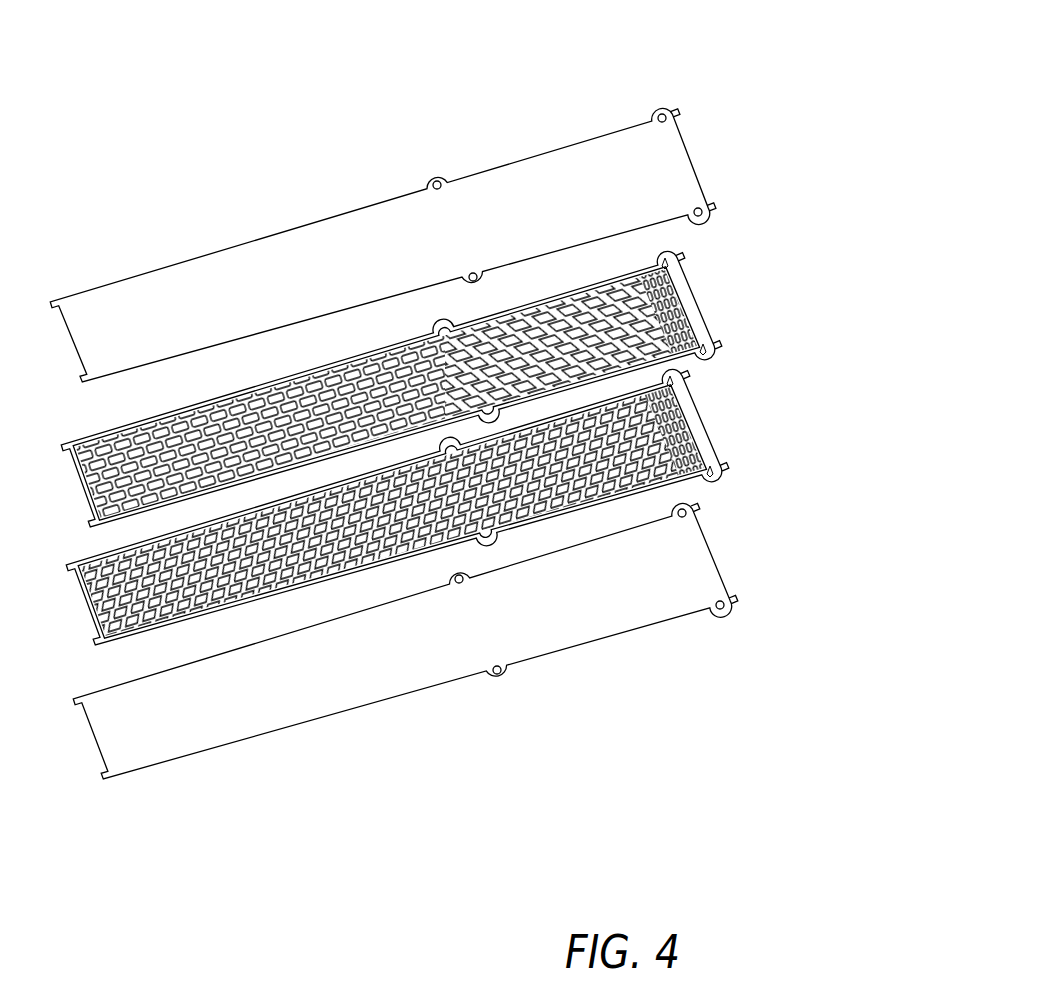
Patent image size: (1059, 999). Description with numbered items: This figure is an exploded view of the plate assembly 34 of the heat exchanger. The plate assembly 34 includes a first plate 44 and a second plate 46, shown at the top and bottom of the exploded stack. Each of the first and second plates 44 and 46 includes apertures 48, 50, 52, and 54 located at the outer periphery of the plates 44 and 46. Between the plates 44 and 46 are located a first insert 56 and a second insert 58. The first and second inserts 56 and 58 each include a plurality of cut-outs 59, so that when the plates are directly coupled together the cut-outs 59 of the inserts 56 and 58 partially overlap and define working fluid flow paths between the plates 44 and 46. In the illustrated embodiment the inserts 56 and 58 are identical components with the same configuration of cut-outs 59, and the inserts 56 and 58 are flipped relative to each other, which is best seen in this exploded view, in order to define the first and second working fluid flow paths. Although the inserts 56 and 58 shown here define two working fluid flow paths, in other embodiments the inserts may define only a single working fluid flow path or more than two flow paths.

The plate assembly 34 is at (821, 196).
The first plate 44 is at (347, 230).
The second plate 46 is at (233, 742).
The aperture 48 is at (662, 112).
The aperture 50 is at (440, 180).
The aperture 52 is at (474, 272).
The aperture 54 is at (701, 203).
The first insert 56 is at (82, 477).
The second insert 58 is at (86, 596).
The cut-outs 59 is at (172, 424).